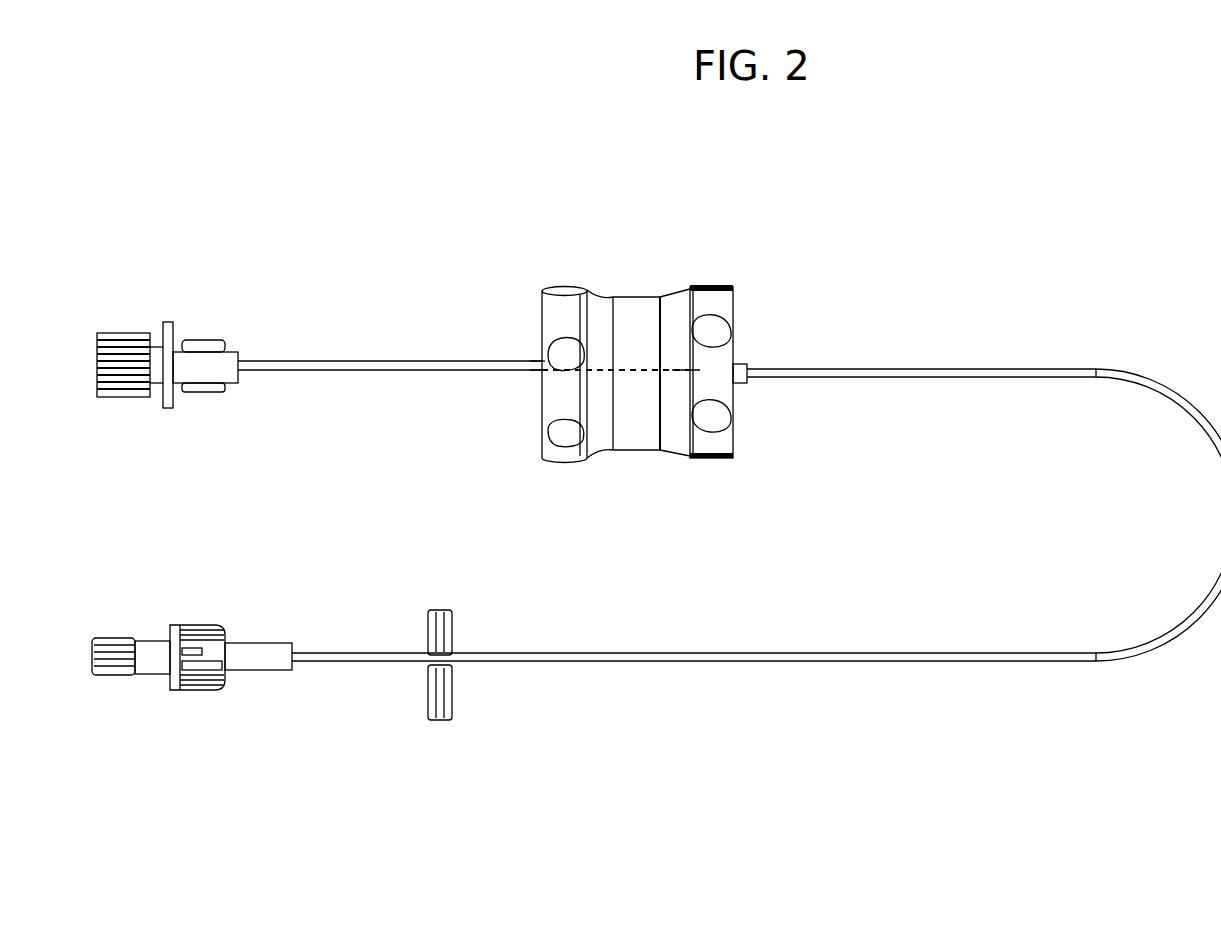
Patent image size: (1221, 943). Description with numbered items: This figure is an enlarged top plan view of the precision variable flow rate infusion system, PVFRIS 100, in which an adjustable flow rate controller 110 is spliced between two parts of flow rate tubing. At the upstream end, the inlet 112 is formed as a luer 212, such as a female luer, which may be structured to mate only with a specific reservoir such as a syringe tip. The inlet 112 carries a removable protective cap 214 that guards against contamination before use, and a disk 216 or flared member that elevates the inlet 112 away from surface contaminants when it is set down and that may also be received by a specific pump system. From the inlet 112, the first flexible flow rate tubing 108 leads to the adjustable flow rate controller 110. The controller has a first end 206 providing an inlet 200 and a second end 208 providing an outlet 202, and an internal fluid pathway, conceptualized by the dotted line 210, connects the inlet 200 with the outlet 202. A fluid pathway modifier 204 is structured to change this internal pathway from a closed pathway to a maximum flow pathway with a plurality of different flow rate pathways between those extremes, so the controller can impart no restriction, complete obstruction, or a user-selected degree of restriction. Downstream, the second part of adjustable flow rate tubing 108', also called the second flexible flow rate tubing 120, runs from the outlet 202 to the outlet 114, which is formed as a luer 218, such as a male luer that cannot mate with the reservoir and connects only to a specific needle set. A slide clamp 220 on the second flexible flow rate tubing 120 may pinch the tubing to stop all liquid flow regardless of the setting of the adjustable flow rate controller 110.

The PVFRIS 100 is at (874, 264).
The inlet 112 is at (184, 338).
The removable protective cap 214 is at (115, 336).
The disk 216 is at (168, 404).
The luer 212 is at (232, 352).
The first flexible flow rate tubing 108 is at (390, 329).
The inlet 200 is at (538, 353).
The fluid pathway modifier 204 is at (617, 364).
The first end 206 is at (560, 292).
The adjustable flow rate controller 110 is at (644, 288).
The dotted line 210 is at (605, 368).
The second end 208 is at (731, 295).
The outlet 202 is at (746, 370).
The adjustable flow rate tubing 108' is at (756, 480).
The second flexible flow rate tubing 120 is at (954, 369).
The outlet 114 is at (188, 603).
The luer 218 is at (267, 650).
The slide clamp 220 is at (440, 625).